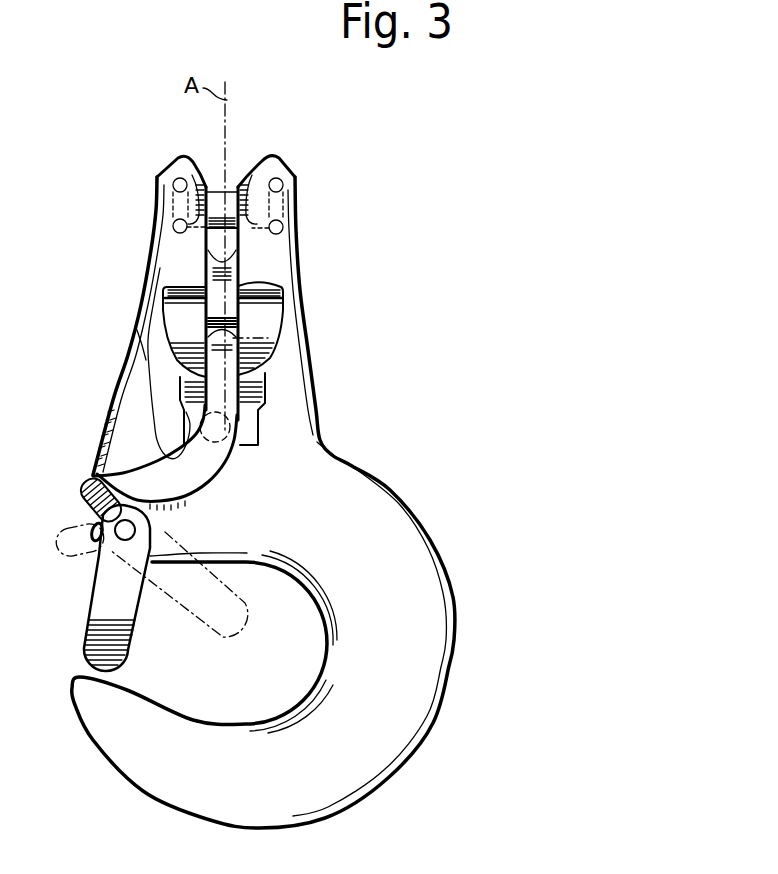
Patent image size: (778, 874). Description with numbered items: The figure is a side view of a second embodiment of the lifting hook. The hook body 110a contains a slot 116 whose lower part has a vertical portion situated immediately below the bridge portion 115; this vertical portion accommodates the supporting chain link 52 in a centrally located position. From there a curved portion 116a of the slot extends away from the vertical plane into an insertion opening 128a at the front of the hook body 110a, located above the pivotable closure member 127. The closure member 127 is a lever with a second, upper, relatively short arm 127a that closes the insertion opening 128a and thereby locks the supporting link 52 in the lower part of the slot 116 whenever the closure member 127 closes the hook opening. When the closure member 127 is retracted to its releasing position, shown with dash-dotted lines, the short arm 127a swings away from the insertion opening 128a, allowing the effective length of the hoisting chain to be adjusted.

The hook body 110a is at (410, 662).
The slot 116 is at (223, 257).
The bridge portion 115 is at (230, 296).
The supporting chain link 52 is at (268, 339).
The curved portion 116a is at (135, 348).
The insertion opening 128a is at (107, 435).
The upper arm 127a is at (80, 488).
The closure member 127 is at (108, 588).